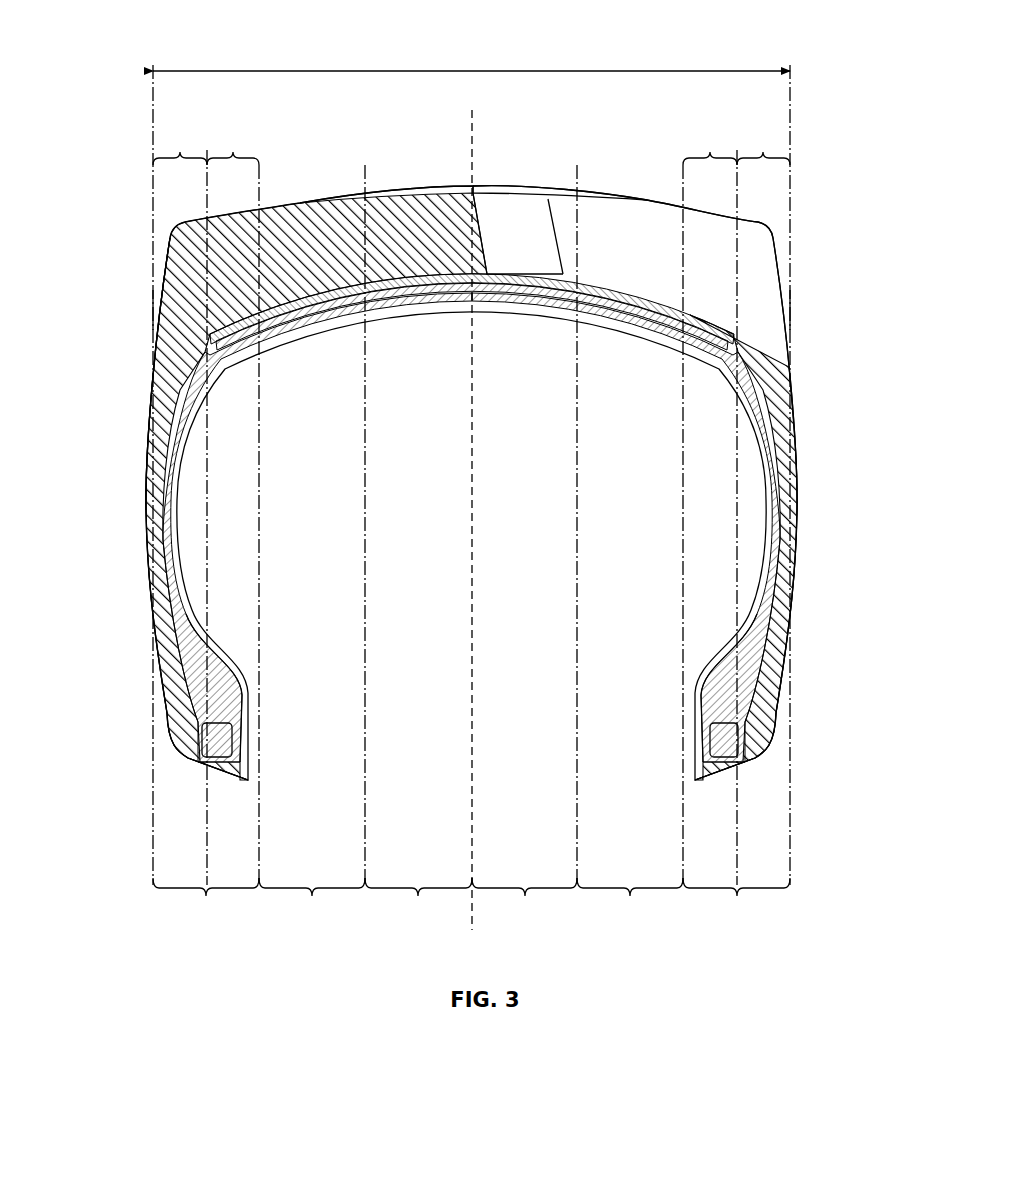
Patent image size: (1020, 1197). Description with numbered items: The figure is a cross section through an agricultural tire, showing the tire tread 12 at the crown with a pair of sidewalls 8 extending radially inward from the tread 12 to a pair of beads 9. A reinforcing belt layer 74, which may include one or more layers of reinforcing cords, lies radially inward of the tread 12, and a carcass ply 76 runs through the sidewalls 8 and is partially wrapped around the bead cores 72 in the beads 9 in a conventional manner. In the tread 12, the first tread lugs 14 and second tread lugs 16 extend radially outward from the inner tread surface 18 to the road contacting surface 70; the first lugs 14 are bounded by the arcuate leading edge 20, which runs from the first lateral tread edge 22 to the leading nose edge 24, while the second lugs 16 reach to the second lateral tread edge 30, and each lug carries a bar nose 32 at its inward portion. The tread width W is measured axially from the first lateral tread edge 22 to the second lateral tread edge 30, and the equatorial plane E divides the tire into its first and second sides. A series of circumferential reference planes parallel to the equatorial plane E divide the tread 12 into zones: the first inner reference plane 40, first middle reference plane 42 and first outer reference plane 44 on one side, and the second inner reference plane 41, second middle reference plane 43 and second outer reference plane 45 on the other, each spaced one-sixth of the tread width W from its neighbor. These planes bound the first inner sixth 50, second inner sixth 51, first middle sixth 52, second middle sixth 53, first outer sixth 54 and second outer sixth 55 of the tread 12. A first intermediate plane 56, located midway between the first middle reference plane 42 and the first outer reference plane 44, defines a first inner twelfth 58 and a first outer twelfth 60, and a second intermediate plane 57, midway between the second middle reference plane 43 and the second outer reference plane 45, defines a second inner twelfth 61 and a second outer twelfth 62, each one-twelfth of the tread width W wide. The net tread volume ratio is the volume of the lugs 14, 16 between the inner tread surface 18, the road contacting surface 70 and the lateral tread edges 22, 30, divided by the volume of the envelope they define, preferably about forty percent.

The tire tread 12 is at (128, 42).
The sidewalls 8 is at (148, 520).
The beads 9 is at (191, 763).
The first tread lugs 14 is at (748, 230).
The second tread lugs 16 is at (198, 262).
The inner tread surface 18 is at (587, 277).
The arcuate leading edge 20 is at (633, 215).
The first lateral tread edge 22 is at (780, 275).
The leading nose edge 24 is at (515, 205).
The second lateral tread edge 30 is at (165, 290).
The bar nose 32 is at (493, 188).
The first inner reference plane 40 is at (577, 396).
The second inner reference plane 41 is at (366, 396).
The first middle reference plane 42 is at (683, 396).
The second middle reference plane 43 is at (259, 428).
The first outer reference plane 44 is at (785, 305).
The second outer reference plane 45 is at (152, 303).
The first inner sixth 50 is at (524, 903).
The second inner sixth 51 is at (418, 903).
The first middle sixth 52 is at (630, 903).
The second middle sixth 53 is at (312, 903).
The first outer sixth 54 is at (736, 903).
The second outer sixth 55 is at (206, 903).
The first intermediate plane 56 is at (737, 453).
The second intermediate plane 57 is at (207, 453).
The first inner twelfth 58 is at (710, 147).
The first outer twelfth 60 is at (770, 475).
The second inner twelfth 61 is at (233, 147).
The second outer twelfth 62 is at (174, 475).
The road contacting surface 70 is at (390, 193).
The bead cores 72 is at (212, 764).
The reinforcing belt layer 74 is at (632, 300).
The carcass ply 76 is at (752, 650).
The tread width W is at (471, 57).
The equatorial plane E is at (472, 497).